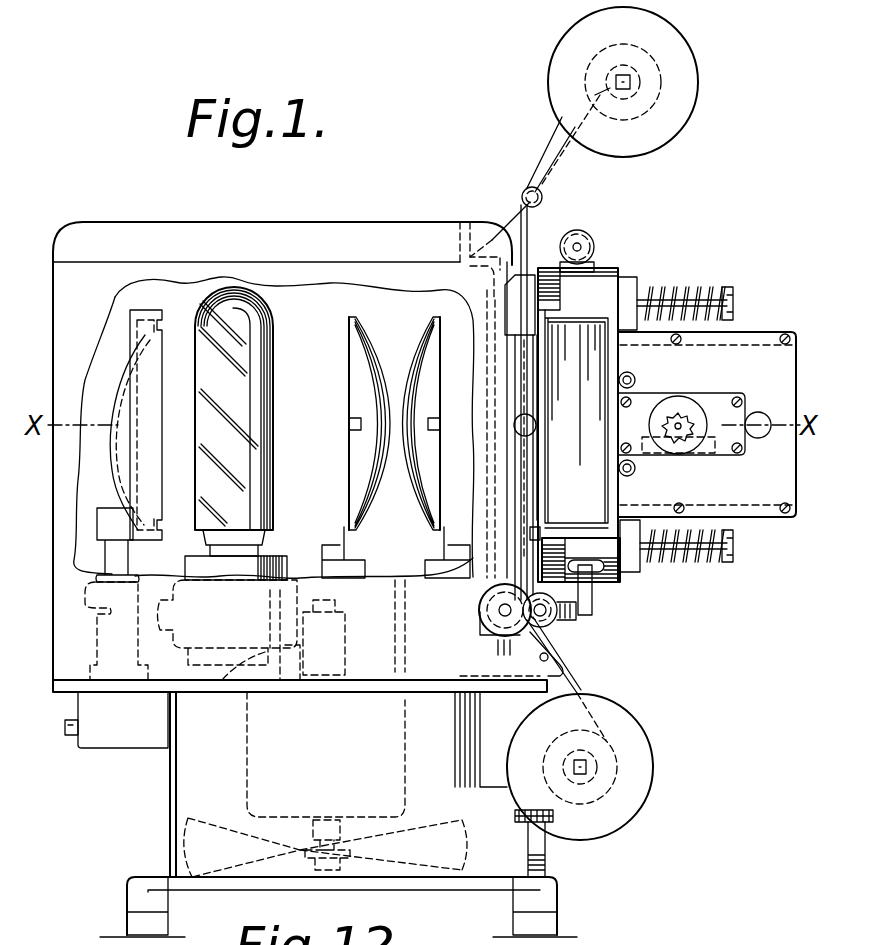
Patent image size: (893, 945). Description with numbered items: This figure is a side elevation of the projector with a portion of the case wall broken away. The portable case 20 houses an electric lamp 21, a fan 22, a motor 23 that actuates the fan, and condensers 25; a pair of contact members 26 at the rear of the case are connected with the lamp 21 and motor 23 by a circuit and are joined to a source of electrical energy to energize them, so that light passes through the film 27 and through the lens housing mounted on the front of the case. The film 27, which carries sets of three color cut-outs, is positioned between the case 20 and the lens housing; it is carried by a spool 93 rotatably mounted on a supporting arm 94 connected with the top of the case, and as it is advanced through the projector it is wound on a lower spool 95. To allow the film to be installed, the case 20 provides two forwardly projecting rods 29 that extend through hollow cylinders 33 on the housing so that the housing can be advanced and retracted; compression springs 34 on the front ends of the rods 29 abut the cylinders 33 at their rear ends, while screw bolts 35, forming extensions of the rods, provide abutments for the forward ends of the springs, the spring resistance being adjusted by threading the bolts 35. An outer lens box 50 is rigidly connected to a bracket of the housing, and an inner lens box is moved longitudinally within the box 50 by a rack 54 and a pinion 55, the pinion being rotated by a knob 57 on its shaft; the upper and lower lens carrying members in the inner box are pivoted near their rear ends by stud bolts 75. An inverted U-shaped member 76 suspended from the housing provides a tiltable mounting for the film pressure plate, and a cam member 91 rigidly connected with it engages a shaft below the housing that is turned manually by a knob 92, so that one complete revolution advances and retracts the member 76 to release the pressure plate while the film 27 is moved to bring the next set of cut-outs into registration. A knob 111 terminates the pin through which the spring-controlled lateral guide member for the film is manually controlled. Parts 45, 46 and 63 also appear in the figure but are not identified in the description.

The portable case 20 is at (161, 800).
The electric lamp 21 is at (272, 405).
The fan 22 is at (443, 822).
The motor 23 is at (408, 758).
The condensers 25 is at (415, 352).
The contact members 26 is at (68, 735).
The film 27 is at (572, 680).
The forwardly projecting rods 29 is at (662, 287).
The hollow cylinders 33 is at (625, 277).
The compression springs 34 is at (701, 287).
The screw bolts 35 is at (735, 292).
The roller shaft 45 is at (593, 258).
The feed roller 46 is at (588, 233).
The outer lens box 50 is at (758, 345).
The rack 54 is at (701, 458).
The pinion 55 is at (668, 412).
The knob 57 is at (684, 403).
The knob 63 is at (760, 438).
The stud bolts 75 is at (634, 378).
The inverted U-shaped member 76 is at (592, 590).
The cam member 91 is at (587, 623).
The knob 92 is at (480, 622).
The spool 93 is at (692, 83).
The supporting arm 94 is at (580, 162).
The lower spool 95 is at (650, 766).
The knob 111 is at (537, 428).